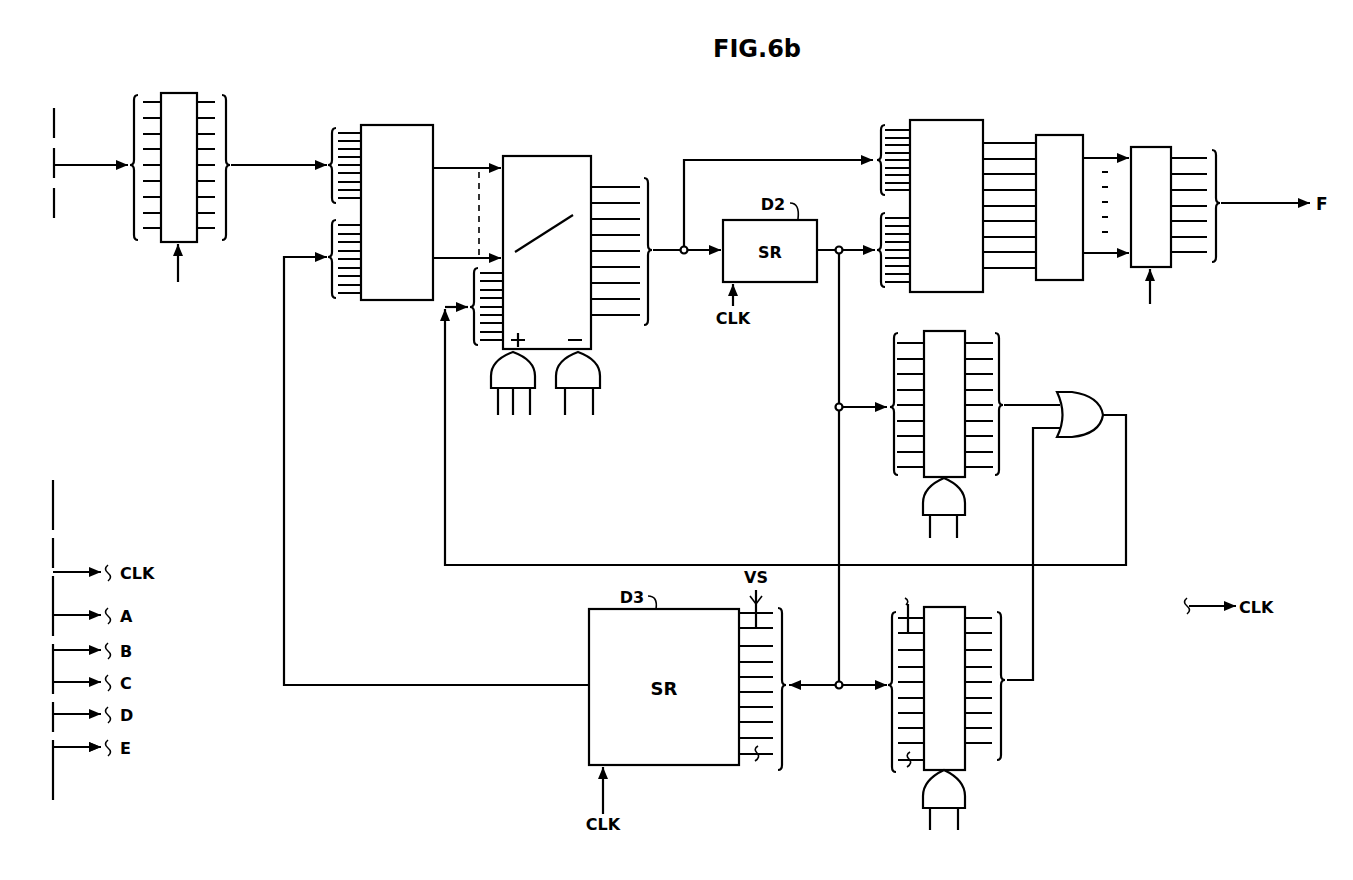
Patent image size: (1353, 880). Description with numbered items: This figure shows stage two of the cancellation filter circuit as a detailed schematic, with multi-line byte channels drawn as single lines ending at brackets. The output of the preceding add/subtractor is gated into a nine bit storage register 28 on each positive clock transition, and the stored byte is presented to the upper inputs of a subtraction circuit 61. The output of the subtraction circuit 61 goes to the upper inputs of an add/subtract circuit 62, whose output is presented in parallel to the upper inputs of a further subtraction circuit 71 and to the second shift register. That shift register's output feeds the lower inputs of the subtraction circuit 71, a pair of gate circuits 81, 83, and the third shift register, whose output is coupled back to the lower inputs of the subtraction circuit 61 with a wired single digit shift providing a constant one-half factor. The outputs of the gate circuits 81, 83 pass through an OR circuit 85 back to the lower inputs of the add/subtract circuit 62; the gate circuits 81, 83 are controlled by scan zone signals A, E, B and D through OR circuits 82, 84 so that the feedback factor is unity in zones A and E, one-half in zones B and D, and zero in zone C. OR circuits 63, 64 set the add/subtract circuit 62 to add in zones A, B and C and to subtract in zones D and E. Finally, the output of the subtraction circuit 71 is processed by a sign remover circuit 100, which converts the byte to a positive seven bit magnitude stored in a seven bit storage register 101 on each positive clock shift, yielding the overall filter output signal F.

The storage register 28 is at (183, 92).
The subtraction circuit 61 is at (395, 124).
The add/subtract circuit 62 is at (553, 155).
The OR circuit 63 is at (493, 368).
The OR circuit 64 is at (599, 368).
The subtraction circuit 71 is at (940, 119).
The gate circuit 81 is at (955, 330).
The OR circuit 82 is at (926, 497).
The gate circuit 83 is at (950, 606).
The OR circuit 84 is at (966, 786).
The OR circuit 85 is at (1077, 391).
The sign remover circuit 100 is at (1052, 134).
The storage register 101 is at (1147, 146).